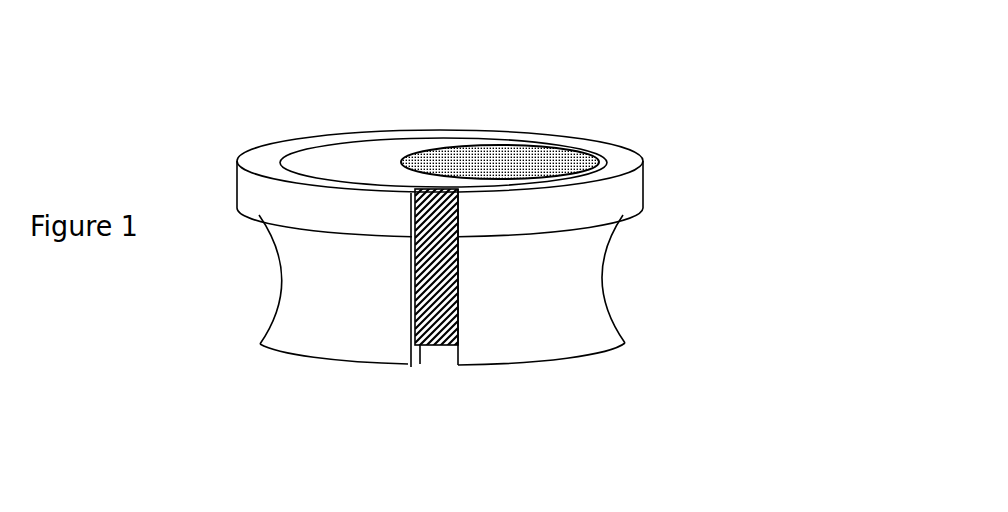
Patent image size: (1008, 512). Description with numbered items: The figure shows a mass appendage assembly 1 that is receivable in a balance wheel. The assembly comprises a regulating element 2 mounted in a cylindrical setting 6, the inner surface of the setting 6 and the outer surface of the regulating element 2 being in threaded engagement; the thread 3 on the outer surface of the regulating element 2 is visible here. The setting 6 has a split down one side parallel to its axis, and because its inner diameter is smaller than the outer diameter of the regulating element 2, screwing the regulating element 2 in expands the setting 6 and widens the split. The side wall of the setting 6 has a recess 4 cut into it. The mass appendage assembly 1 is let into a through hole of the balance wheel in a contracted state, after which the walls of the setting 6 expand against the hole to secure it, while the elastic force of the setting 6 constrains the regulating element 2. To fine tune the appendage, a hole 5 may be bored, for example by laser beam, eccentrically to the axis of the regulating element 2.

The mass appendage assembly 1 is at (498, 225).
The regulating element 2 is at (377, 160).
The thread 3 is at (545, 301).
The recess 4 is at (268, 293).
The hole 5 is at (552, 156).
The cylindrical setting 6 is at (255, 158).